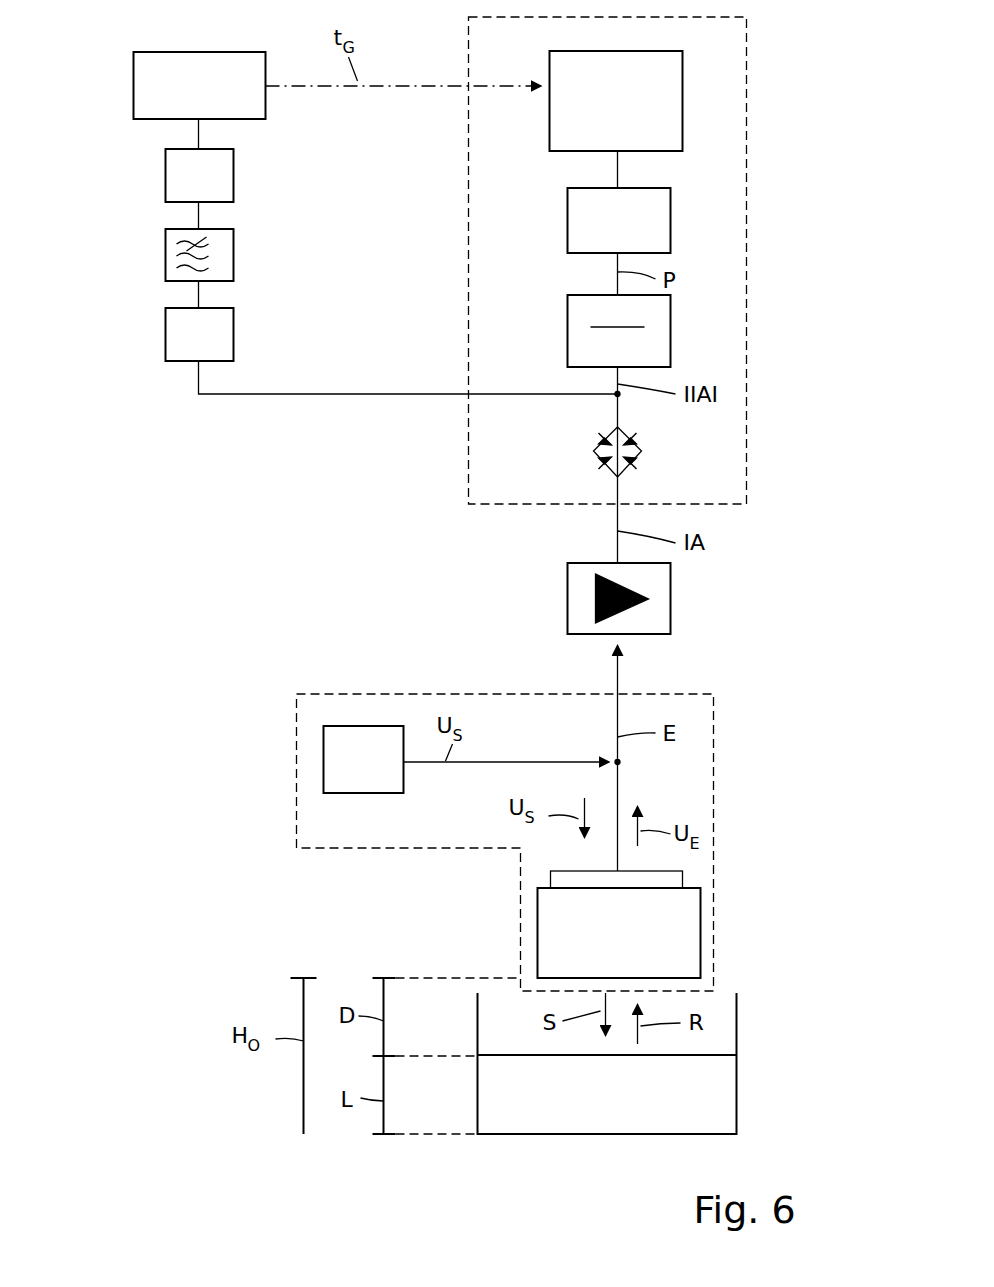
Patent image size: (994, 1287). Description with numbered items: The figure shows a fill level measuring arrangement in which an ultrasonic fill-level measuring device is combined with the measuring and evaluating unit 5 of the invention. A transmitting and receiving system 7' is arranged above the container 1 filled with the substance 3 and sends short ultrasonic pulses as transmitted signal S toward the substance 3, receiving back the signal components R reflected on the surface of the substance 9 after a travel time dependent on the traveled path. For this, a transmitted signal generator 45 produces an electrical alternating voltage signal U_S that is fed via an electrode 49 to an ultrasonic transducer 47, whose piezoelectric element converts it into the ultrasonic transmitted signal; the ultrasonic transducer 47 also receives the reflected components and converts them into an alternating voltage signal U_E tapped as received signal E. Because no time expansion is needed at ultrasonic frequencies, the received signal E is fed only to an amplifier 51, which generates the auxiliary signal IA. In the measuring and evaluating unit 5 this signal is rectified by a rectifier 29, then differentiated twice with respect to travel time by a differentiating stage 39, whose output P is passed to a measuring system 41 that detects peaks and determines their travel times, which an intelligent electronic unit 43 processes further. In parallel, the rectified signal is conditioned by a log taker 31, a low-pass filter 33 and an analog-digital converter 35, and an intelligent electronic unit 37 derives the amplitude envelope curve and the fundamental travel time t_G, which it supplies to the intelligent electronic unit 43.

The intelligent electronic unit 37 is at (133, 88).
The analog-digital converter 35 is at (165, 158).
The low-pass filter 33 is at (165, 248).
The log taker 31 is at (165, 315).
The measuring and evaluating unit 5 is at (458, 280).
The intelligent electronic unit 43 is at (668, 127).
The measuring system 41 is at (619, 220).
The differentiating stage 39 is at (655, 336).
The rectifier 29 is at (655, 456).
The amplifier 51 is at (655, 616).
The transmitting and receiving system 7' is at (464, 842).
The transmitted signal generator 45 is at (364, 759).
The ultrasonic transducer 47 is at (619, 933).
The electrode 49 is at (668, 880).
The container 1 is at (736, 1025).
The substance 3 is at (607, 1084).
The surface of the substance 9 is at (688, 1057).